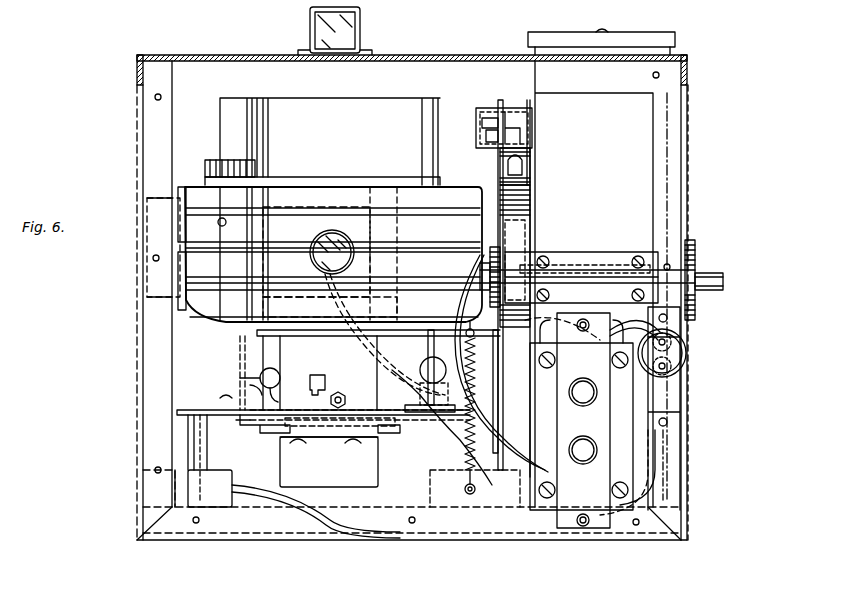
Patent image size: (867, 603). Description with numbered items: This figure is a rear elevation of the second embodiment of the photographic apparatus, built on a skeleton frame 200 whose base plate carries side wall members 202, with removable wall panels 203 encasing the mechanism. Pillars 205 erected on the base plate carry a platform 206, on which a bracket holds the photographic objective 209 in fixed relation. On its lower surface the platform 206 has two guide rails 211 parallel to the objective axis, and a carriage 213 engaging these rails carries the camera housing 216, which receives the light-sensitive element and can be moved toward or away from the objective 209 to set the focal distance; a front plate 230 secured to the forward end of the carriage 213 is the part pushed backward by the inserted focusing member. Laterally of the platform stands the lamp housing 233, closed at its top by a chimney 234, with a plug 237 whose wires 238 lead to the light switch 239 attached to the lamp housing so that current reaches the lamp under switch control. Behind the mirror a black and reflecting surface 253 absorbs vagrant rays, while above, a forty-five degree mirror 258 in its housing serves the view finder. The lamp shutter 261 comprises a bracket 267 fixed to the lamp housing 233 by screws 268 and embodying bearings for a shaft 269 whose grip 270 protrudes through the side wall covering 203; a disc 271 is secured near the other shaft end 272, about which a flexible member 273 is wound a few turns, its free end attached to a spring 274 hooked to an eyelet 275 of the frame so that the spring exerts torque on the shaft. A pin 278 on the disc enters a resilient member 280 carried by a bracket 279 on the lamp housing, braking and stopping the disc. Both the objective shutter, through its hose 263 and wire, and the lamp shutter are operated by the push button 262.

The skeleton frame 200 is at (683, 140).
The side wall members 202 is at (150, 316).
The removable wall panels 203 is at (683, 462).
The pillars 205 is at (204, 458).
The platform 206 is at (218, 416).
The photographic objective 209 is at (350, 258).
The guide rails 211 is at (396, 433).
The carriage 213 is at (278, 433).
The camera housing 216 is at (410, 185).
The front plate 230 is at (370, 481).
The lamp housing 233 is at (640, 130).
The chimney 234 is at (668, 38).
The plug 237 is at (146, 480).
The wires 238 is at (380, 540).
The light switch 239 is at (605, 530).
The black and reflecting surface 253 is at (147, 288).
The 45° mirror 258 is at (352, 31).
The lamp shutter 261 is at (428, 370).
The push button 262 is at (688, 354).
The hose 263 is at (425, 384).
The bracket 267 is at (588, 259).
The screws 268 is at (638, 256).
The shaft 269 is at (558, 270).
The grip 270 is at (712, 276).
The disc 271 is at (500, 421).
The shaft end 272 is at (478, 258).
The flexible member 273 is at (457, 334).
The spring 274 is at (477, 452).
The eyelet 275 is at (478, 490).
The pin 278 is at (490, 112).
The bracket 279 is at (535, 133).
The resilient member 280 is at (486, 137).